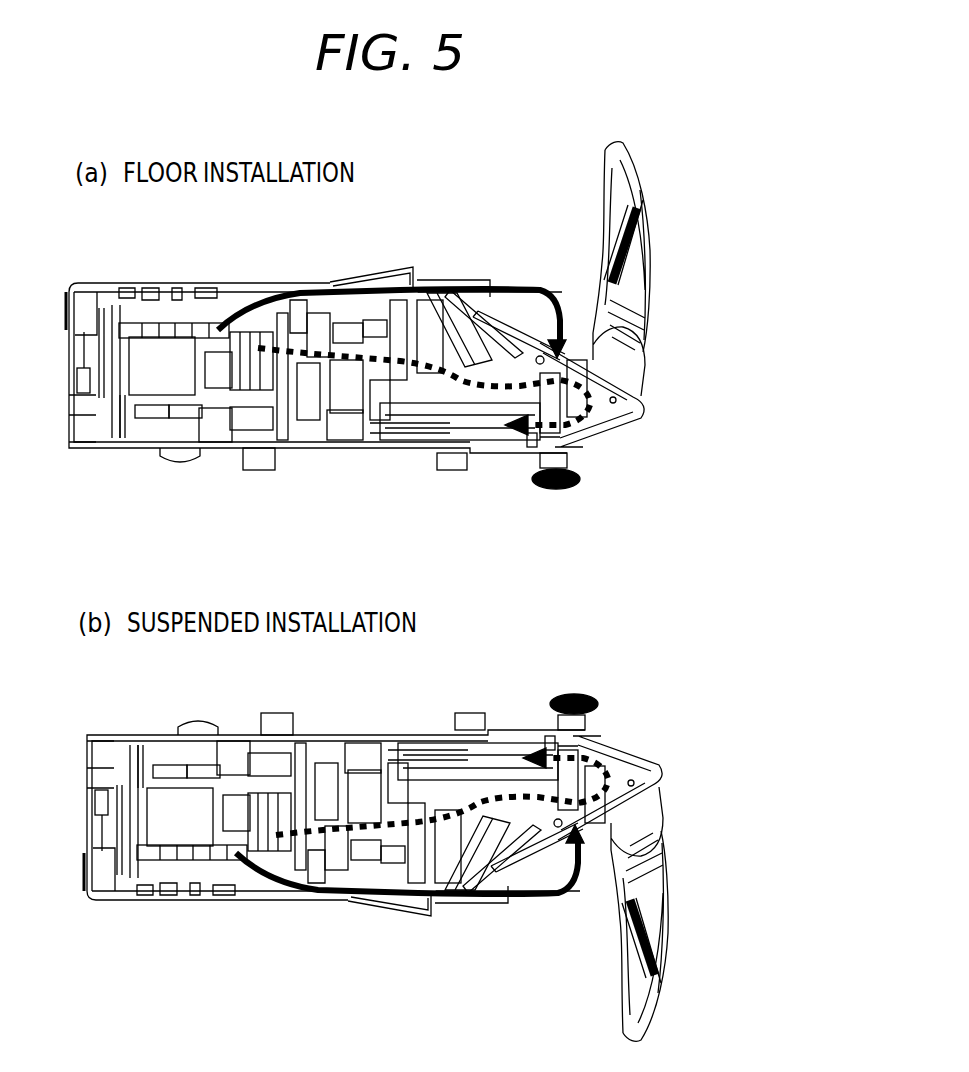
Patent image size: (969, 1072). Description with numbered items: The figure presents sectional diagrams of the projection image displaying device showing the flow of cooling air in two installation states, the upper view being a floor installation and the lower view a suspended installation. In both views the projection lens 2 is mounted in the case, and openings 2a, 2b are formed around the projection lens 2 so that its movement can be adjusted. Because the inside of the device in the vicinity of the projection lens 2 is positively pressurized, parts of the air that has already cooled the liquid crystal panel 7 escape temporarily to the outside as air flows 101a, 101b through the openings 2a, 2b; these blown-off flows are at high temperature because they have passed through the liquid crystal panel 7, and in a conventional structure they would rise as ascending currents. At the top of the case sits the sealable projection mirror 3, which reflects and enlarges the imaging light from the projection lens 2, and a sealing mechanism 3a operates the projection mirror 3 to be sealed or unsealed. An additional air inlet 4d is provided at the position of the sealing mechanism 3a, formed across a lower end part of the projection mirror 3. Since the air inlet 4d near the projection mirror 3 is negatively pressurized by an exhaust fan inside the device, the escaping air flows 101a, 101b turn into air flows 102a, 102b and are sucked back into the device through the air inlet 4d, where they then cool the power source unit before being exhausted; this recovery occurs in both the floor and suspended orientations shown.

The liquid crystal panel 7 is at (260, 368).
The air flow 101a is at (368, 287).
The air flow 101b is at (405, 377).
The air flow 102a is at (562, 297).
The air flow 102b is at (563, 417).
The projection lens 2 is at (485, 318).
The opening 2a is at (424, 267).
The opening 2b is at (482, 393).
The projection mirror 3 is at (643, 240).
The sealing mechanism 3a is at (613, 362).
The air inlet 4d is at (577, 348).